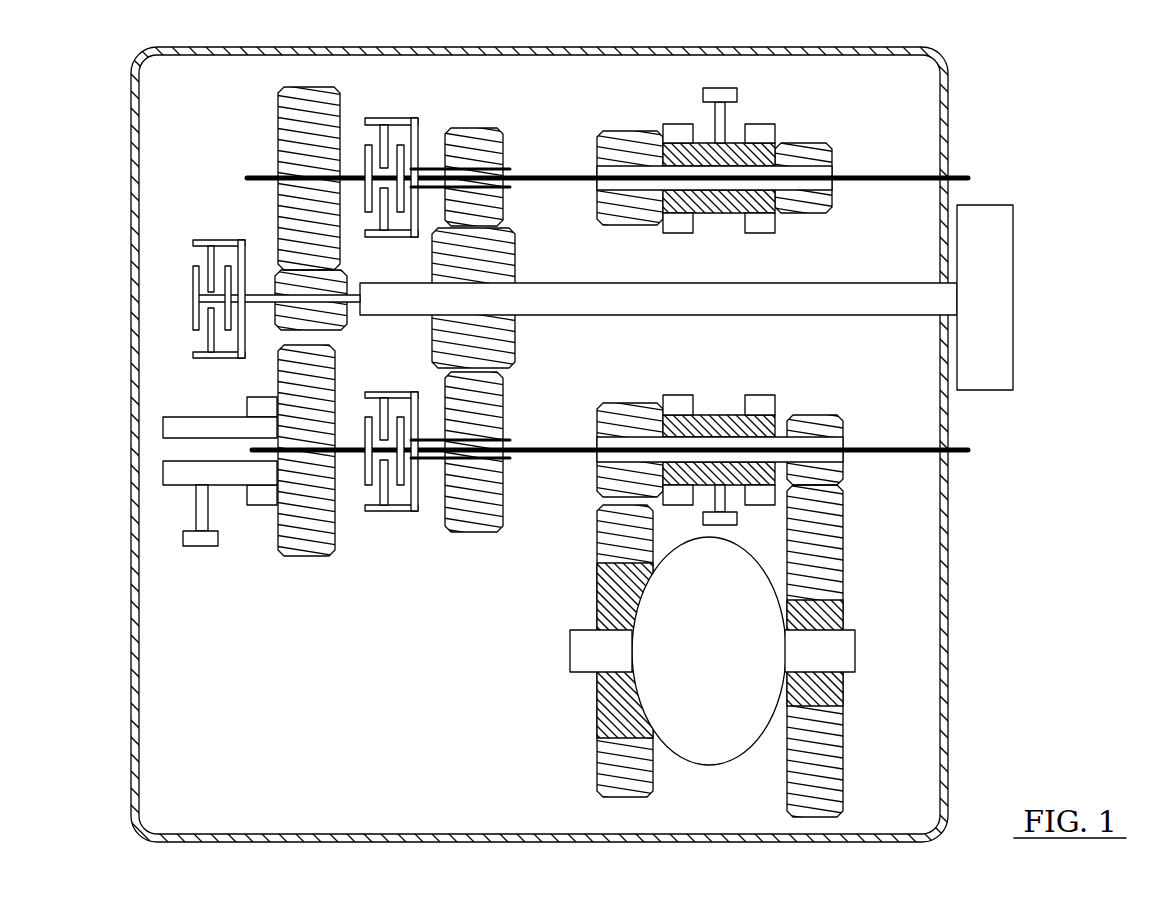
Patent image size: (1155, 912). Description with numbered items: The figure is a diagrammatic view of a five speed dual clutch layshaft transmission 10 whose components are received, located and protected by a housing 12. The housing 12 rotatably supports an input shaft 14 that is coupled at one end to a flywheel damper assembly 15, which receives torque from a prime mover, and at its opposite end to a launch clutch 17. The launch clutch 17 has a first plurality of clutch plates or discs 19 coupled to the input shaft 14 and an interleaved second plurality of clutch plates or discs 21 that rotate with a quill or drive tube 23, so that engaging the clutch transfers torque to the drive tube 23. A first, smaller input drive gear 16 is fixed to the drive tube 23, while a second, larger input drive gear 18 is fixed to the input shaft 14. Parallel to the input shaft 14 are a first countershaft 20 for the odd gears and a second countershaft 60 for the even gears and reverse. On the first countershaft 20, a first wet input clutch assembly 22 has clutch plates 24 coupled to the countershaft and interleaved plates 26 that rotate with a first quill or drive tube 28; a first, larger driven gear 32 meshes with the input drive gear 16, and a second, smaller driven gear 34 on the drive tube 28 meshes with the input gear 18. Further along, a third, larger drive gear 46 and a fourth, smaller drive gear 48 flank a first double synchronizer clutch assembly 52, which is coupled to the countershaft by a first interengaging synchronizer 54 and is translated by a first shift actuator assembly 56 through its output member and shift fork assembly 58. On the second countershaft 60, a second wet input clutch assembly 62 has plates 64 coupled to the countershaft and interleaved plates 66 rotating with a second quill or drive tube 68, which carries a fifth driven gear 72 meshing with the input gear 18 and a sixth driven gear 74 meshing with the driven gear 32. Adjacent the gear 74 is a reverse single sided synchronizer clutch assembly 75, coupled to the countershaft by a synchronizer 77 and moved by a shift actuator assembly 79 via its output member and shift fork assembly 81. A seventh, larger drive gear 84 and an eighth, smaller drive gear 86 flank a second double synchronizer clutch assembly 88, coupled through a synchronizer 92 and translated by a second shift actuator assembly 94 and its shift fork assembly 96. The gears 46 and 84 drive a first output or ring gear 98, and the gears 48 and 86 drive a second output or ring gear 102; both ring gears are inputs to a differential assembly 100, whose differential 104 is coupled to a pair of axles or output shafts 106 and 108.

The five speed dual clutch transmission 10 is at (1054, 102).
The housing 12 is at (950, 78).
The input shaft 14 is at (845, 283).
The flywheel damper assembly 15 is at (990, 205).
The first, smaller input drive gear 16 is at (347, 322).
The launch clutch 17 is at (191, 280).
The second, larger input drive gear 18 is at (517, 338).
The first plurality of clutch plates or discs 19 is at (193, 268).
The first layshaft or countershaft 20 is at (906, 176).
The second plurality of clutch plates or discs 21 is at (207, 340).
The first wet input clutch assembly 22 is at (433, 153).
The quill or drive tube 23 is at (266, 295).
The first plurality of clutch plates or discs 24 is at (410, 168).
The second plurality of clutch plates or discs 26 is at (382, 145).
The first quill or drive tube 28 is at (470, 175).
The first, larger driven gear 32 is at (280, 96).
The second, smaller driven gear 34 is at (480, 128).
The third, larger drive gear 46 is at (622, 131).
The fourth, smaller drive gear 48 is at (812, 143).
The first double synchronizer clutch assembly 52 is at (577, 456).
The first interengaging synchronizer 54 is at (722, 193).
The first shift actuator assembly 56 is at (699, 94).
The output member and shift fork assembly 58 is at (713, 122).
The second layshaft or countershaft 60 is at (903, 455).
The second wet input clutch assembly 62 is at (423, 471).
The first plurality of clutch plates or discs 64 is at (366, 480).
The second plurality of clutch plates or discs 66 is at (400, 495).
The second quill or drive tube 68 is at (437, 440).
The fifth driven gear 72 is at (465, 536).
The sixth driven gear 74 is at (281, 545).
The reverse dog clutch or single sided synchronizer clutch assembly 75 is at (181, 500).
The synchronizer 77 is at (265, 440).
The shift actuator assembly 79 is at (211, 498).
The output member and shift fork assembly 81 is at (212, 520).
The seventh, larger drive gear 84 is at (626, 403).
The eighth, smaller drive gear 86 is at (810, 415).
The second double synchronizer clutch assembly 88 is at (577, 456).
The synchronizer 92 is at (720, 440).
The second shift actuator assembly 94 is at (762, 523).
The output member and shift fork assembly 96 is at (703, 522).
The first output or ring gear 98 is at (597, 705).
The differential assembly 100 is at (709, 677).
The second output or ring gear 102 is at (845, 692).
The differential 104 is at (693, 768).
The axle or output shaft 106 is at (570, 650).
The axle or output shaft 108 is at (855, 650).